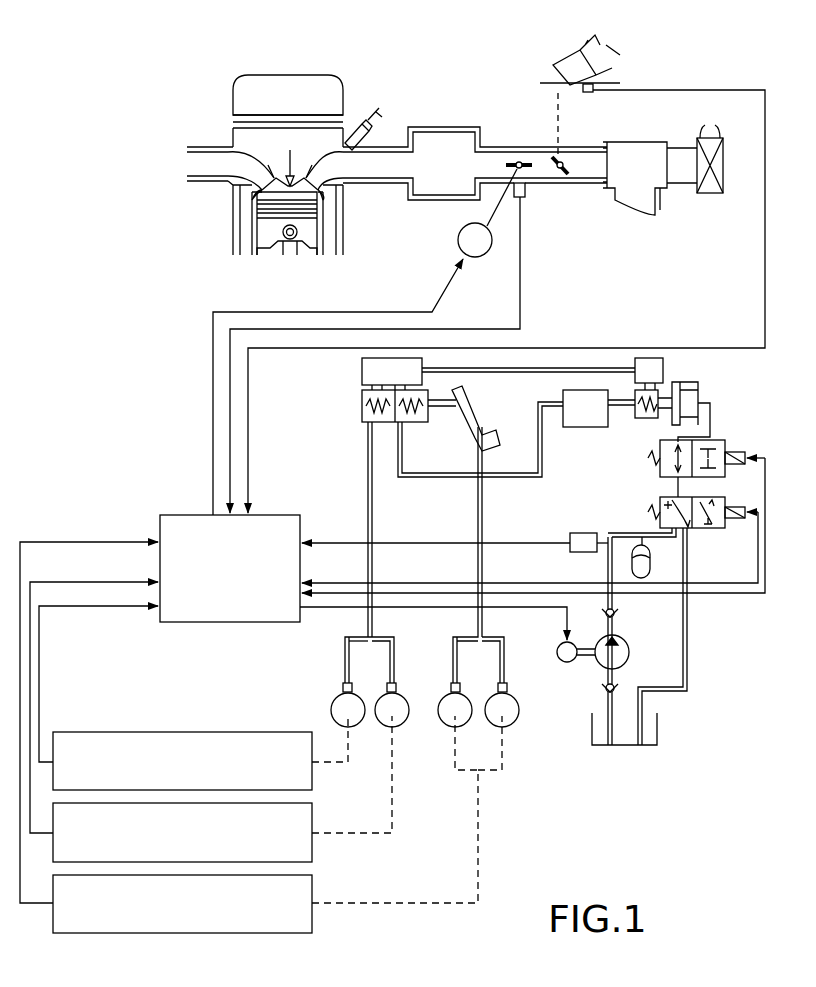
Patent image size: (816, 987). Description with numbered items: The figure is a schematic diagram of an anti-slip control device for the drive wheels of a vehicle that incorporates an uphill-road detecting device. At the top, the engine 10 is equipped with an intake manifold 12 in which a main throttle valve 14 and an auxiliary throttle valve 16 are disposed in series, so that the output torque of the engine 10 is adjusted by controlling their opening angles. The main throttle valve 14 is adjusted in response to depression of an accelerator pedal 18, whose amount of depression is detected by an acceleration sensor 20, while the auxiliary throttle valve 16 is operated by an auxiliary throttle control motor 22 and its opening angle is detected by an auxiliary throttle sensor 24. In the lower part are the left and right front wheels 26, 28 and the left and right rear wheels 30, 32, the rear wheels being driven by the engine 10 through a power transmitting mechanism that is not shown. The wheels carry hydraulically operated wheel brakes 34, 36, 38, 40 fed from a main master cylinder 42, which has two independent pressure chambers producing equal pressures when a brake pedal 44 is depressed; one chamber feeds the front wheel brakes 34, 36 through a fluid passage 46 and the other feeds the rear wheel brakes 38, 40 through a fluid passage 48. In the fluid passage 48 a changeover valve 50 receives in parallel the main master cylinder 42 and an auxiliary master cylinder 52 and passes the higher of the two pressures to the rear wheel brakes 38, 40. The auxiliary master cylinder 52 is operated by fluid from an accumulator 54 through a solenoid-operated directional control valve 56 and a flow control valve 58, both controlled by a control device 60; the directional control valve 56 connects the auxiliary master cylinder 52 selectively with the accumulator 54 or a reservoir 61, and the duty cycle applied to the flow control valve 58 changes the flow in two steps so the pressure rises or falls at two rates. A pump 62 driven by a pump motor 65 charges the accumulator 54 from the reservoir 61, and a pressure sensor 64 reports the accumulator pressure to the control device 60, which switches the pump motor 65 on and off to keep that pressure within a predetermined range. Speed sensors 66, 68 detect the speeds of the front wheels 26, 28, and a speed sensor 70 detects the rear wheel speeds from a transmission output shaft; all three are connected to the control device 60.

The engine 10 is at (289, 64).
The intake manifold 12 is at (531, 147).
The main throttle valve 14 is at (559, 175).
The auxiliary throttle valve 16 is at (516, 163).
The accelerator pedal 18 is at (553, 62).
The acceleration sensor 20 is at (590, 93).
The auxiliary throttle control motor 22 is at (481, 257).
The auxiliary throttle sensor 24 is at (527, 196).
The left front wheel 26 is at (352, 723).
The right front wheel 28 is at (398, 723).
The left rear wheel 30 is at (460, 723).
The right rear wheel 32 is at (508, 723).
The wheel brake 34 is at (343, 684).
The wheel brake 36 is at (388, 688).
The wheel brake 38 is at (451, 686).
The wheel brake 40 is at (498, 688).
The main master cylinder 42 is at (362, 404).
The brake pedal 44 is at (470, 420).
The fluid passage 46 is at (372, 521).
The fluid passage 48 is at (425, 477).
The changeover valve 50 is at (598, 427).
The auxiliary master cylinder 52 is at (698, 396).
The accumulator 54 is at (644, 551).
The directional control valve 56 is at (660, 500).
The flow control valve 58 is at (720, 440).
The control device 60 is at (294, 516).
The reservoir 61 is at (657, 733).
The pump 62 is at (628, 650).
The pressure sensor 64 is at (574, 533).
The pump motor 65 is at (558, 658).
The speed sensor 66 is at (312, 778).
The speed sensor 68 is at (312, 850).
The speed sensor 70 is at (312, 922).